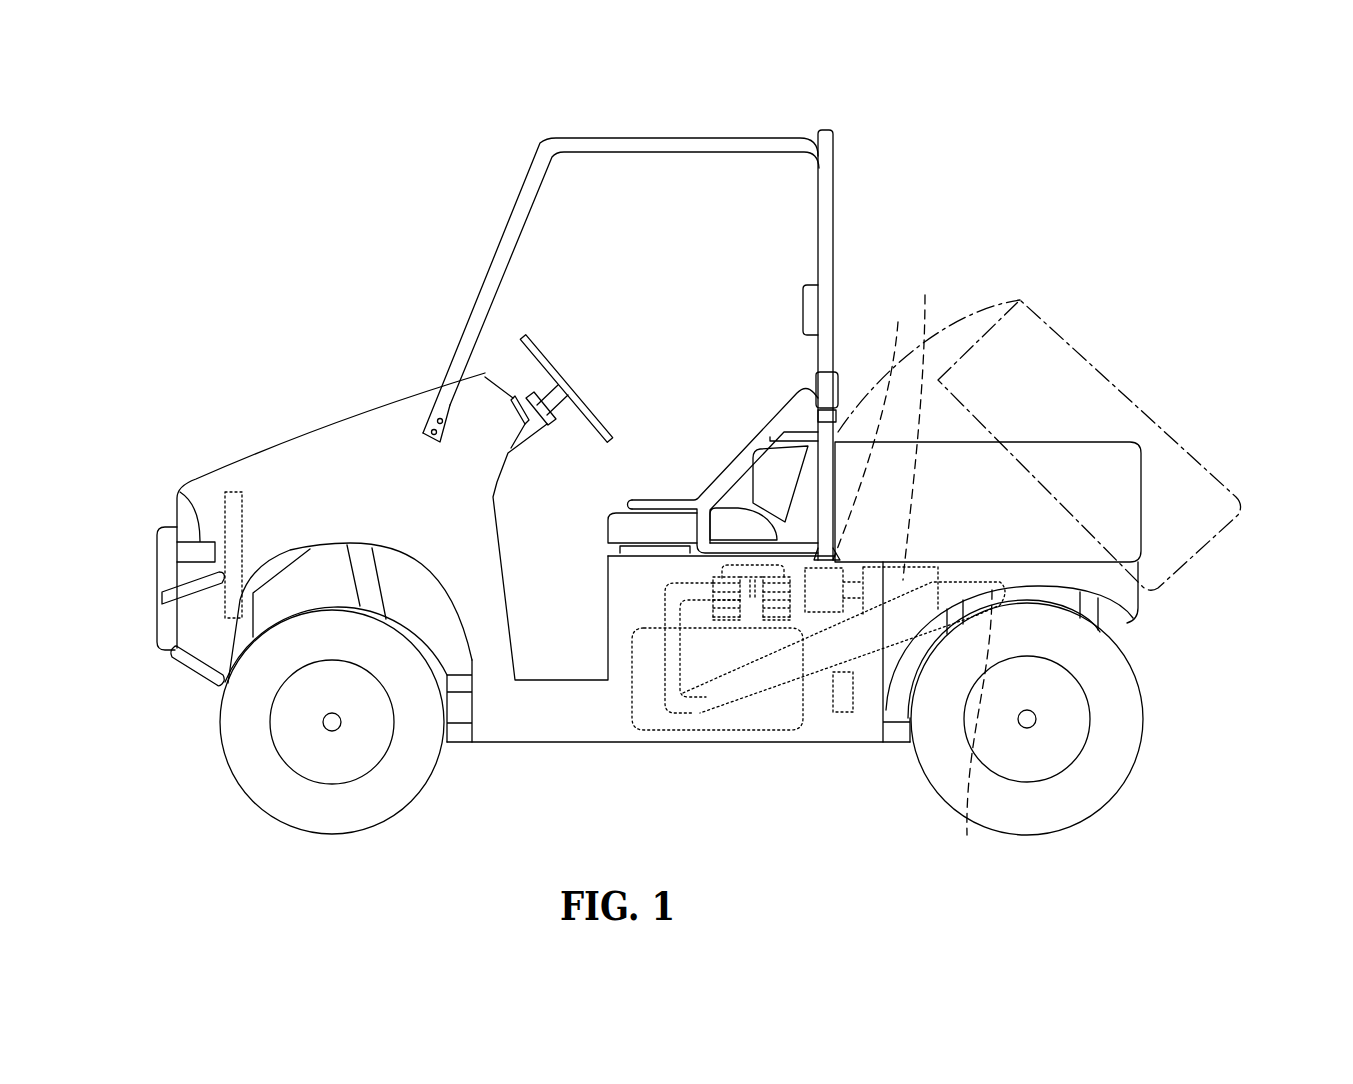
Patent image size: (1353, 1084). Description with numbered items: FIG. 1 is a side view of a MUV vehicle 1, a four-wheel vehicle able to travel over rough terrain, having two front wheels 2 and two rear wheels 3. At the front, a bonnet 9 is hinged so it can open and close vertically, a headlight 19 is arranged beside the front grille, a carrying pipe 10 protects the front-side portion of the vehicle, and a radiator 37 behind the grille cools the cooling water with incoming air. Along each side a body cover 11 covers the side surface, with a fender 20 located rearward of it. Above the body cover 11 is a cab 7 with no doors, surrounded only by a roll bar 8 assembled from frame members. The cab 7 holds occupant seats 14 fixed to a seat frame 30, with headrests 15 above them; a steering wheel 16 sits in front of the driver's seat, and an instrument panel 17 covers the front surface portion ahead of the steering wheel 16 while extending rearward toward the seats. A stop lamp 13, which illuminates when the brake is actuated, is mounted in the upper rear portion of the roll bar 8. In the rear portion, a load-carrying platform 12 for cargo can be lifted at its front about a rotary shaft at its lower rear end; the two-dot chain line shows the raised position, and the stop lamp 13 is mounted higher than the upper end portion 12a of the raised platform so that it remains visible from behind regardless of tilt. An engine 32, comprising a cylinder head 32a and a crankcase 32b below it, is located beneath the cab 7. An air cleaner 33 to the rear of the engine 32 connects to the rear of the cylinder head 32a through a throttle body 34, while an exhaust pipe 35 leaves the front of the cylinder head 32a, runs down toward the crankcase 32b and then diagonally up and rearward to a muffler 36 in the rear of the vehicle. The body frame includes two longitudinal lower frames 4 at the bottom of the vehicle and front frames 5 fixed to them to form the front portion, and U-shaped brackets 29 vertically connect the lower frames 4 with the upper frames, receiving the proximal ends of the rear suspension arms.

The MUV vehicle 1 is at (1093, 152).
The front wheels 2 is at (398, 797).
The rear wheels 3 is at (1093, 797).
The lower frames 4 is at (462, 737).
The front frames 5 is at (265, 620).
The cab 7 is at (671, 248).
The roll bar 8 is at (521, 192).
The bonnet 9 is at (316, 433).
The carrying pipe 10 is at (157, 560).
The body cover 11 is at (573, 720).
The load-carrying platform 12 is at (1088, 358).
The upper end portion 12a is at (1020, 300).
The stop lamp 13 is at (836, 146).
The occupant seats 14 is at (778, 415).
The headrests 15 is at (802, 312).
The steering wheel 16 is at (546, 355).
The instrument panel 17 is at (502, 378).
The headlight 19 is at (172, 507).
The fender 20 is at (1127, 597).
The U-shaped brackets 29 is at (956, 683).
The seat frame 30 is at (833, 425).
The engine 32 is at (710, 738).
The cylinder head 32a is at (717, 560).
The crankcase 32b is at (773, 725).
The air cleaner 33 is at (921, 426).
The throttle body 34 is at (871, 428).
The exhaust pipe 35 is at (665, 606).
The muffler 36 is at (973, 728).
The radiator 37 is at (213, 500).